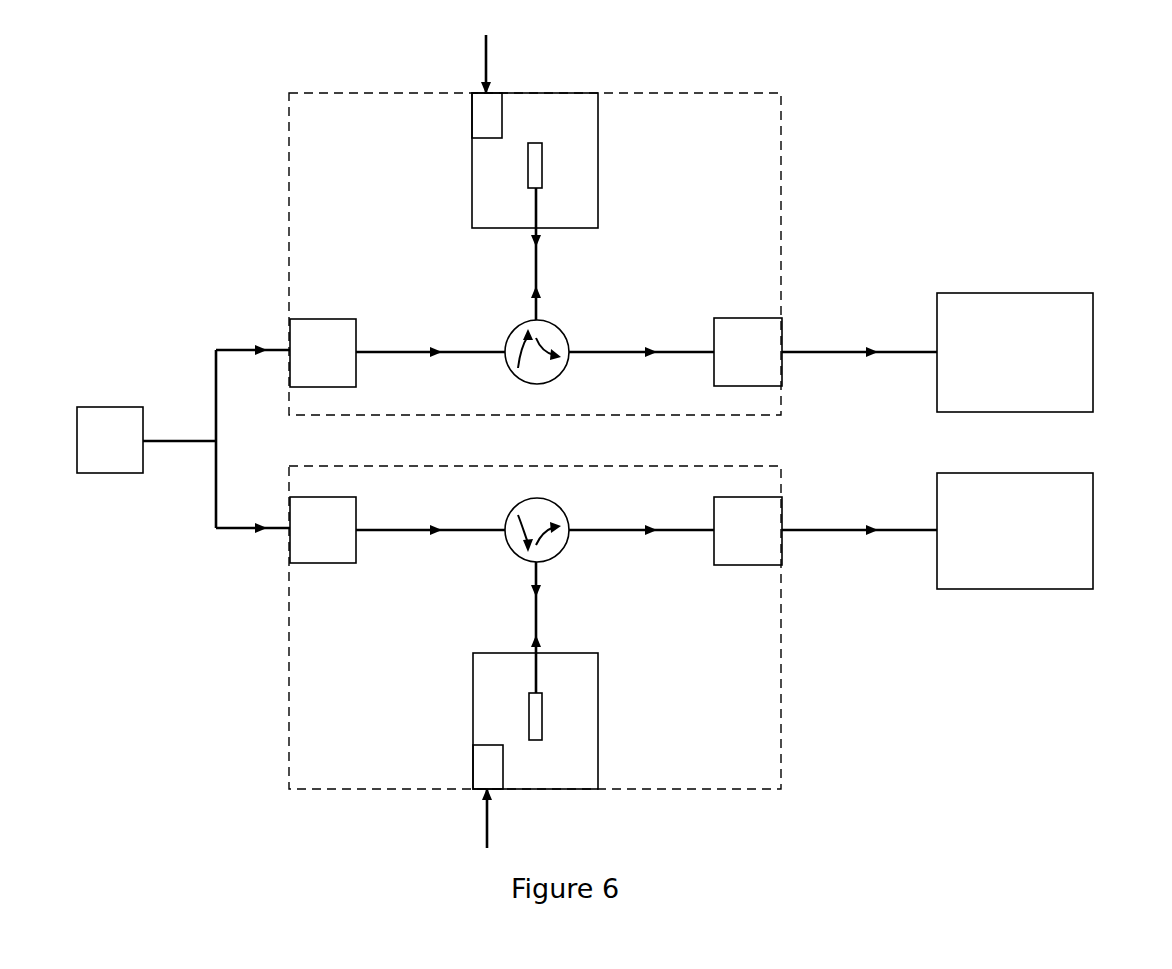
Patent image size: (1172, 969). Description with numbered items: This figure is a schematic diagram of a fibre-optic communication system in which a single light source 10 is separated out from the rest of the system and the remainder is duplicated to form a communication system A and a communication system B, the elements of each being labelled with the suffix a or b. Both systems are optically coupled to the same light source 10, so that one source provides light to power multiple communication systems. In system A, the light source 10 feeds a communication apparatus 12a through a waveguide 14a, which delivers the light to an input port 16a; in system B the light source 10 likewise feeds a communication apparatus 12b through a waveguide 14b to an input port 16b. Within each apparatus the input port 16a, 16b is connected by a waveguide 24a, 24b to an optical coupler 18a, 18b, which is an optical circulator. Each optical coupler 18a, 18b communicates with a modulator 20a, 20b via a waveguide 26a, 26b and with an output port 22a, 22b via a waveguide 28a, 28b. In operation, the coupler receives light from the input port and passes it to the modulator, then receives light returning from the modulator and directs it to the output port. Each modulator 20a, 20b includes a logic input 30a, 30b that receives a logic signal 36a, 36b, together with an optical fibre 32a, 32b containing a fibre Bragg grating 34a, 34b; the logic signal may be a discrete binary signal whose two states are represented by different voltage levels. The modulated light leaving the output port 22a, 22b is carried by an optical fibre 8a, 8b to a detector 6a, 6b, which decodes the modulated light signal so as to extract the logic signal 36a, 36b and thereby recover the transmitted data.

The light source 10 is at (110, 440).
The communication apparatus 12a is at (289, 155).
The communication apparatus 12b is at (289, 727).
The waveguide 14a is at (245, 350).
The waveguide 14b is at (245, 530).
The input port 16a is at (323, 353).
The input port 16b is at (323, 530).
The optical coupler 18a is at (567, 337).
The optical coupler 18b is at (566, 550).
The modulator 20a is at (472, 212).
The modulator 20b is at (473, 670).
The output port 22a is at (748, 352).
The output port 22b is at (748, 531).
The waveguide 24a is at (378, 352).
The waveguide 24b is at (385, 530).
The waveguide 26a is at (535, 292).
The waveguide 26b is at (536, 606).
The waveguide 28a is at (652, 352).
The waveguide 28b is at (652, 530).
The logic input 30a is at (472, 118).
The logic input 30b is at (473, 763).
The optical fibre 32a is at (540, 213).
The optical fibre 32b is at (537, 670).
The fibre Bragg grating 34a is at (544, 172).
The fibre Bragg grating 34b is at (543, 715).
The logic signal 36a is at (486, 55).
The logic signal 36b is at (487, 826).
The detector 6a is at (1015, 352).
The detector 6b is at (1015, 531).
The optical fibre 8a is at (845, 352).
The optical fibre 8b is at (850, 532).